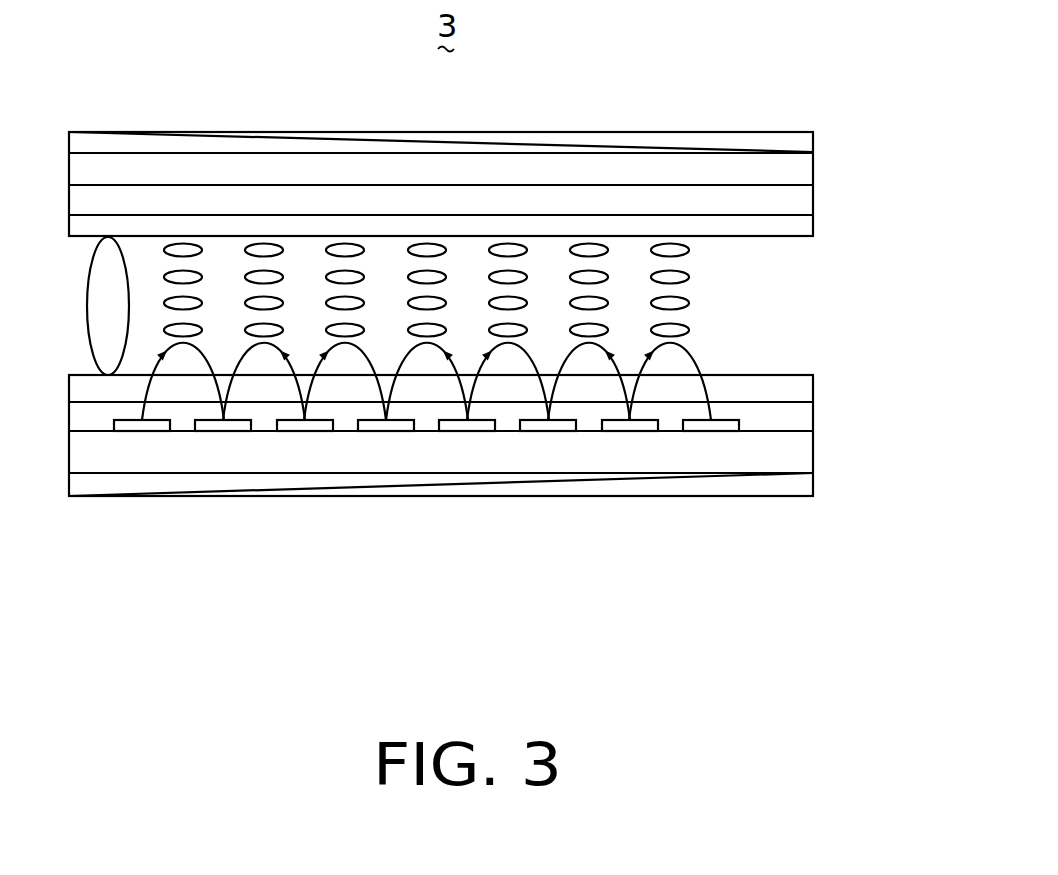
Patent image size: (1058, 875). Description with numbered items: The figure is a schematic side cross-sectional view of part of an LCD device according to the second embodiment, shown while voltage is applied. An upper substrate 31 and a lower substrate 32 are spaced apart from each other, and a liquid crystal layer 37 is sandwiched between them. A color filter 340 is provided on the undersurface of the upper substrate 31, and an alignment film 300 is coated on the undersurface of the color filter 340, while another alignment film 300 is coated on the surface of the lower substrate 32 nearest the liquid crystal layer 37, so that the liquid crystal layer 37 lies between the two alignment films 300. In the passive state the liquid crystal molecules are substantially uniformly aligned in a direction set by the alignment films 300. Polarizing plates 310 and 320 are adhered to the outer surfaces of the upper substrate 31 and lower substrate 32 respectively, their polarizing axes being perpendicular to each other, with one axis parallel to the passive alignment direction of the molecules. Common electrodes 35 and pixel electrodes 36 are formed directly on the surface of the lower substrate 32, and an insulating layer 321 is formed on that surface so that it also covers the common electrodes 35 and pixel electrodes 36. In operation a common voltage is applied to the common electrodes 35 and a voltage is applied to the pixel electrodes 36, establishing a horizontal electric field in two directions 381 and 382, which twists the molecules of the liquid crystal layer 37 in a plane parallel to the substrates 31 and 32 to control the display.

The polarizing plate 310 is at (771, 146).
The upper substrate 31 is at (785, 173).
The color filter 340 is at (800, 200).
The alignment film 300 is at (800, 225).
The liquid crystal layer 37 is at (709, 294).
The insulating layer 321 is at (795, 420).
The lower substrate 32 is at (790, 454).
The polarizing plate 320 is at (803, 485).
The common electrode 35 is at (242, 431).
The pixel electrode 36 is at (138, 431).
The electric field direction 381 is at (232, 385).
The electric field direction 382 is at (700, 387).